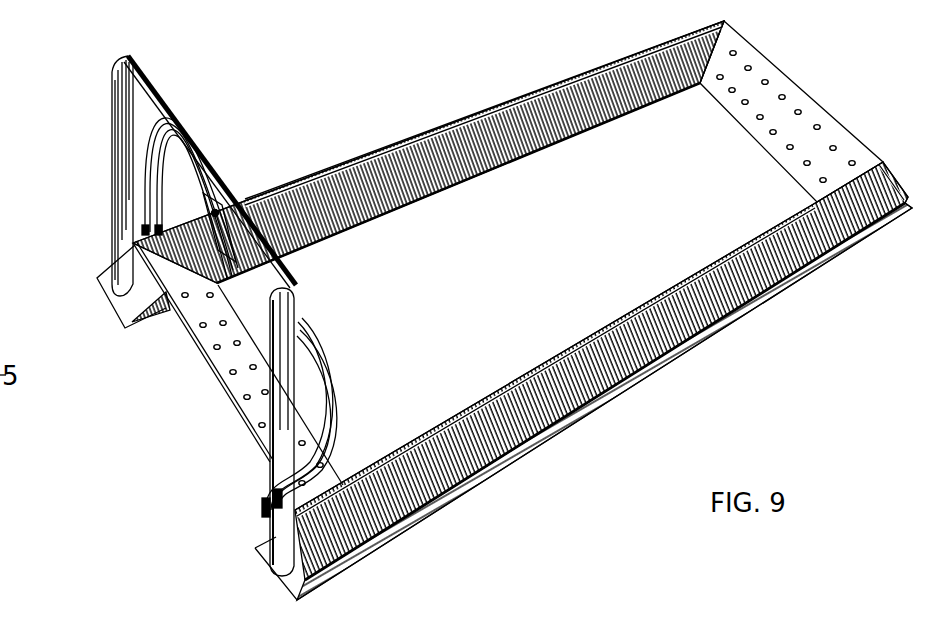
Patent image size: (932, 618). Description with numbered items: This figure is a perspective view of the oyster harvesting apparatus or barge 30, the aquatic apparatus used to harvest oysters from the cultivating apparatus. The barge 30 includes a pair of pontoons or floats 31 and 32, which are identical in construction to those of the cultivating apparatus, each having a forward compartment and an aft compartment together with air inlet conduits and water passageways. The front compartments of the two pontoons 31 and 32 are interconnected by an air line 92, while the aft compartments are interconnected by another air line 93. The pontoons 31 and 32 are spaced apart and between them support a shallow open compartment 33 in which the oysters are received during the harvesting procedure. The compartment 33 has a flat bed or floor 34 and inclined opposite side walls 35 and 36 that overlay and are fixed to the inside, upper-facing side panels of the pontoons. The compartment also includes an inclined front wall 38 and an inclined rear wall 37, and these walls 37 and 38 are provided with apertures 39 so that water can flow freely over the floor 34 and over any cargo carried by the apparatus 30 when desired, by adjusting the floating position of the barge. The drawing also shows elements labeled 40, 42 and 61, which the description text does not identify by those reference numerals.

The oyster harvesting apparatus 30 is at (668, 372).
The pontoon 31 is at (106, 292).
The pontoon 32 is at (262, 557).
The shallow open compartment 33 is at (224, 469).
The floor 34 is at (509, 284).
The side wall 35 is at (455, 425).
The side wall 36 is at (396, 152).
The rear wall 37 is at (815, 118).
The front wall 38 is at (222, 357).
The apertures 39 is at (738, 53).
The posts 40 is at (120, 193).
The diagonal bar 42 is at (158, 92).
The clamp 61 is at (222, 203).
The air line 92 is at (142, 217).
The air line 93 is at (157, 218).